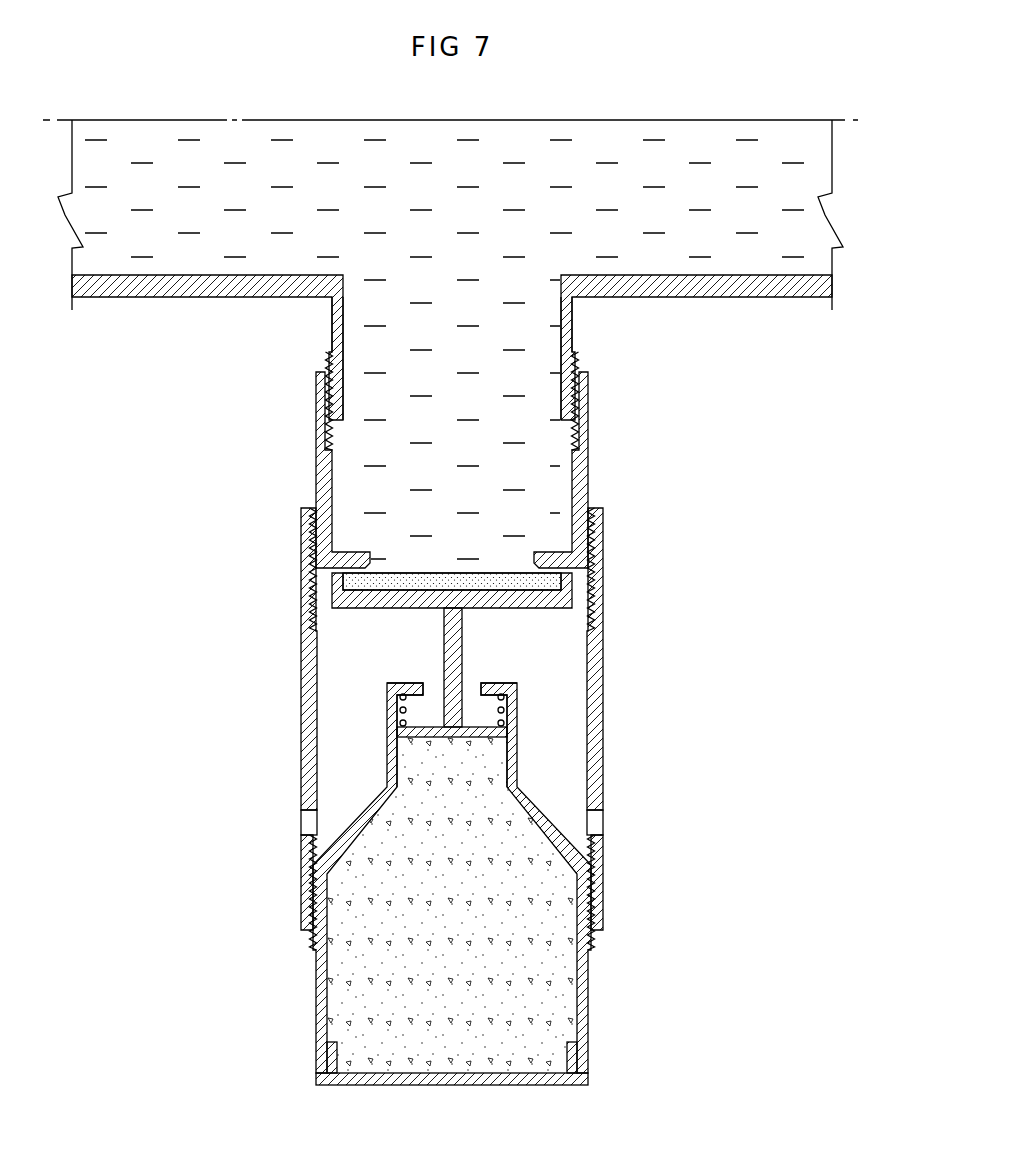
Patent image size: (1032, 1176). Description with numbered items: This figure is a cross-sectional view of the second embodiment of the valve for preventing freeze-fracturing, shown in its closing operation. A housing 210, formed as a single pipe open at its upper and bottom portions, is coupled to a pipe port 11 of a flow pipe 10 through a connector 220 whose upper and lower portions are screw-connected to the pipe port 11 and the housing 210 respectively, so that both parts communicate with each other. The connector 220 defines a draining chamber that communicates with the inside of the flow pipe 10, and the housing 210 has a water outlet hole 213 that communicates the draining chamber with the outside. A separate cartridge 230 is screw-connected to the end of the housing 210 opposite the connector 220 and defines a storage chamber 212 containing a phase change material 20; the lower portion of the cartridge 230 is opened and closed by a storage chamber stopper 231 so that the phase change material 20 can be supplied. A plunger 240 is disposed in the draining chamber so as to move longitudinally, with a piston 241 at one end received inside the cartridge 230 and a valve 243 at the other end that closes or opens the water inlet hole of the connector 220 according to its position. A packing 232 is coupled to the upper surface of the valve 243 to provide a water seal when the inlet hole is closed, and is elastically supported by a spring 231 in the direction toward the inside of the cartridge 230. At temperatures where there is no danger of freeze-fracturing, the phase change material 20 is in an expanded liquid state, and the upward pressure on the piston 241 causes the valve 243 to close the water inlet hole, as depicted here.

The flow pipe 10 is at (200, 293).
The pipe port 11 is at (573, 336).
The phase change material 20 is at (430, 1003).
The housing 210 is at (598, 682).
The storage chamber 212 is at (578, 958).
The water outlet hole 213 is at (303, 829).
The connector 220 is at (575, 453).
The cartridge 230 is at (592, 993).
The storage chamber stopper 231 is at (497, 1078).
The packing 232 is at (495, 571).
The plunger 240 is at (462, 671).
The piston 241 is at (492, 742).
The valve 243 is at (574, 593).